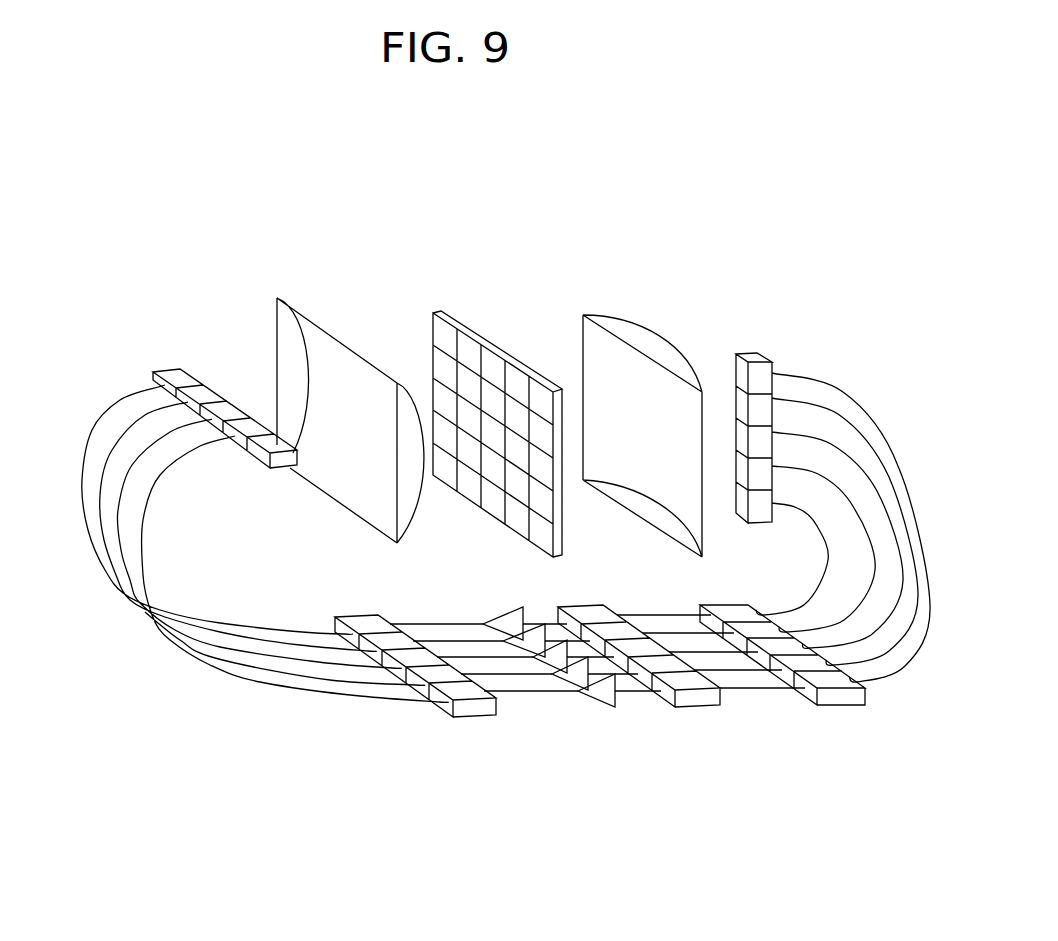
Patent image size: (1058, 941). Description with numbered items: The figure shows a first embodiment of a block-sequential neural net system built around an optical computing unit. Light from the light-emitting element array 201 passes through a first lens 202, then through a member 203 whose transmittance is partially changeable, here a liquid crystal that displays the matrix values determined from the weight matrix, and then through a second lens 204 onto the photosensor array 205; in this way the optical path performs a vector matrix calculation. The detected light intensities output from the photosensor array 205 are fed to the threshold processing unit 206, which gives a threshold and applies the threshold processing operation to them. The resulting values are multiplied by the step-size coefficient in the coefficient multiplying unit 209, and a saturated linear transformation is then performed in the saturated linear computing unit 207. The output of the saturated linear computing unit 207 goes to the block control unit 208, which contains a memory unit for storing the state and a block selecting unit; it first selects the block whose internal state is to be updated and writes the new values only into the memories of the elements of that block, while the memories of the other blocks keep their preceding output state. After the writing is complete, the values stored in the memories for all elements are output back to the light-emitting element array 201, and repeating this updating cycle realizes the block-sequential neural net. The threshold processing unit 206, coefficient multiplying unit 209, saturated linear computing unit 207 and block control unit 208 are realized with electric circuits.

The light-emitting element array 201 is at (146, 361).
The lens 202 is at (273, 289).
The member whose transmittance is partially changeable 203 is at (430, 303).
The lens 204 is at (630, 312).
The photosensor array 205 is at (745, 341).
The threshold processing unit 206 is at (826, 717).
The saturated linear computing unit 207 is at (611, 713).
The block control unit 208 is at (474, 730).
The coefficient multiplying unit 209 is at (717, 720).